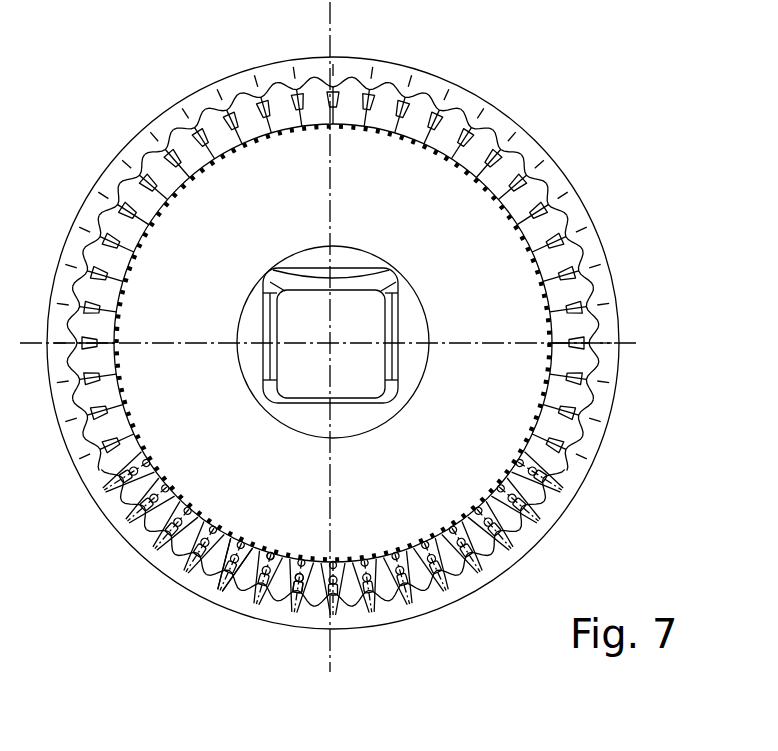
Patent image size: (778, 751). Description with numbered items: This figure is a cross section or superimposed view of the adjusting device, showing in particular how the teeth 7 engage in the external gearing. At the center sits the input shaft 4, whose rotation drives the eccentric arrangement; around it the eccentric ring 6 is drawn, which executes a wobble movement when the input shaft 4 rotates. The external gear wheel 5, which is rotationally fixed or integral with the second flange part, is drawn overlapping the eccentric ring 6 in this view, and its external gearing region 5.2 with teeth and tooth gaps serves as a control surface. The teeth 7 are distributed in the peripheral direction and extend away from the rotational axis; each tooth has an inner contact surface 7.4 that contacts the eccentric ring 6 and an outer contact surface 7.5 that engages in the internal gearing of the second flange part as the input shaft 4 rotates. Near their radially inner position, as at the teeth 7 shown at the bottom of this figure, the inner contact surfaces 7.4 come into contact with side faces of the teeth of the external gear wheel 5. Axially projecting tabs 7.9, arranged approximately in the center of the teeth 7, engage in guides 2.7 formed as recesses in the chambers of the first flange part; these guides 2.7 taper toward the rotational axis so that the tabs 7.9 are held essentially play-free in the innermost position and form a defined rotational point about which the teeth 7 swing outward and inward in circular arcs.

The guide 2.7 is at (438, 117).
The input shaft 4 is at (313, 331).
The external gear wheel 5 is at (437, 172).
The external gearing region 5.2 is at (343, 128).
The eccentric ring 6 is at (453, 461).
The tooth 7 is at (285, 600).
The inner contact surface 7.4 is at (245, 552).
The outer contact surface 7.5 is at (297, 600).
The tab 7.9 is at (247, 582).